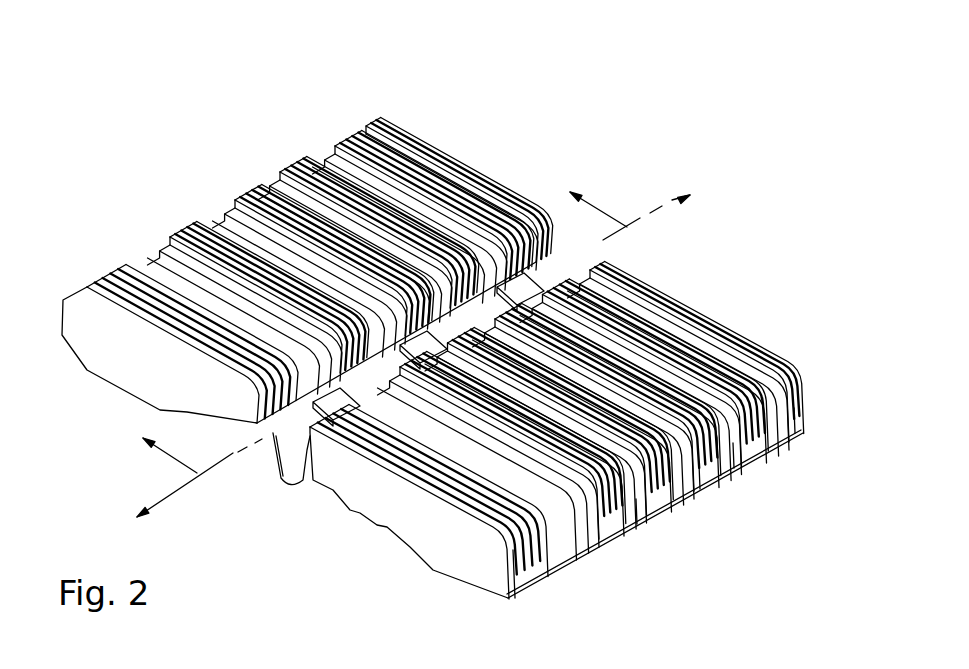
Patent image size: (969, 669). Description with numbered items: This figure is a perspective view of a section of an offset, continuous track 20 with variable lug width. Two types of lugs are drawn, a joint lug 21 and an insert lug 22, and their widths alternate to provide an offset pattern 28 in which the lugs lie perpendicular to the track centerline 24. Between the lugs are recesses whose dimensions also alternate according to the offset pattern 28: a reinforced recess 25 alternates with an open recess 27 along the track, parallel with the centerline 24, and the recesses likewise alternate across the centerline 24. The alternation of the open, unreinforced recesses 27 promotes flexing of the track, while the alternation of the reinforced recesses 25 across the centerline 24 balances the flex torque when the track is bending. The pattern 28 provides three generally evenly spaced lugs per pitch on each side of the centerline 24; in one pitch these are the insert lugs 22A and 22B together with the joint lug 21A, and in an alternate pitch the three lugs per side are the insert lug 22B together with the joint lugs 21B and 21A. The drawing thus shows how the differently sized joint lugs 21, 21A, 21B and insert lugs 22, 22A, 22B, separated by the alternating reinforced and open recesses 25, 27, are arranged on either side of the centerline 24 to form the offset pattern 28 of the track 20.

The track 20 is at (125, 360).
The joint lug 21 is at (617, 538).
The joint lug 21A is at (291, 180).
The joint lug 21B is at (190, 242).
The insert lug 22 is at (548, 568).
The insert lug 22A is at (240, 213).
The insert lug 22B is at (331, 152).
The centerline 24 is at (176, 494).
The reinforced recess 25 is at (700, 489).
The recess 27 is at (637, 525).
The offset pattern 28 is at (567, 120).